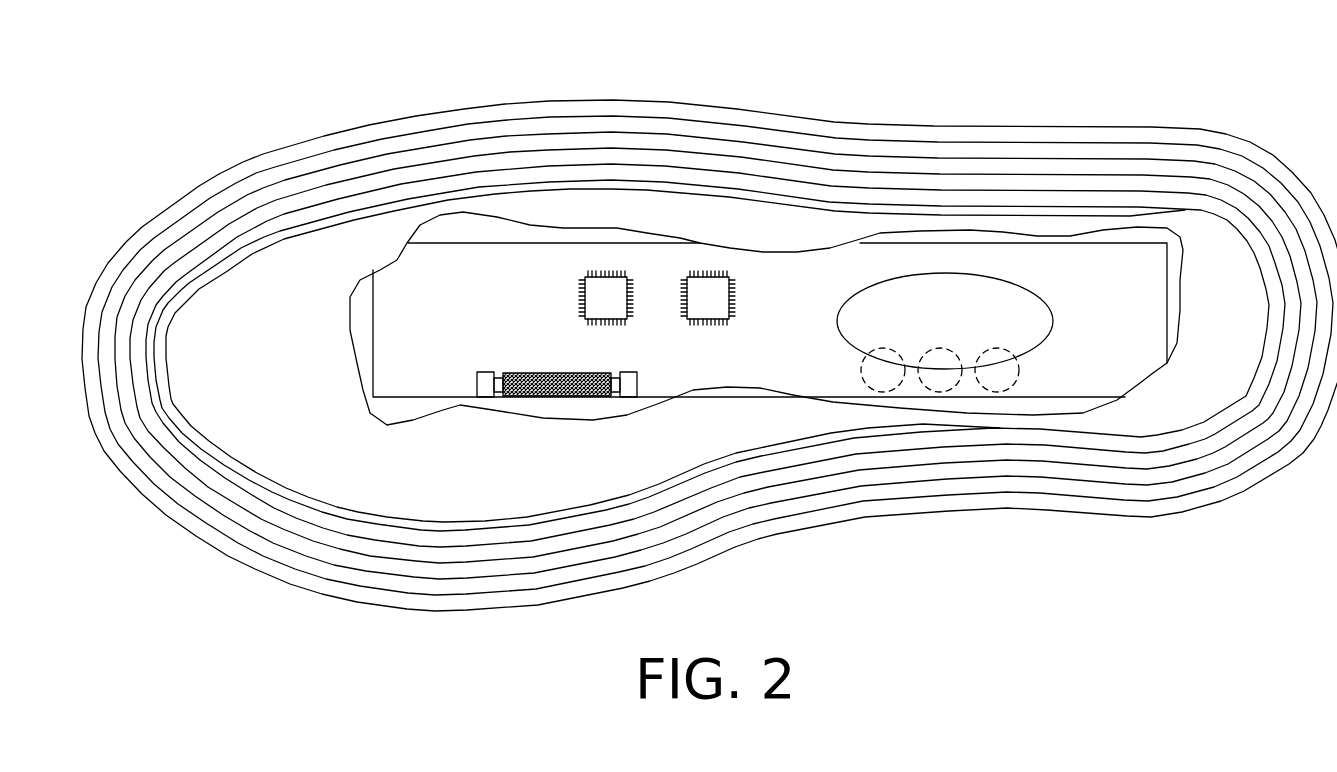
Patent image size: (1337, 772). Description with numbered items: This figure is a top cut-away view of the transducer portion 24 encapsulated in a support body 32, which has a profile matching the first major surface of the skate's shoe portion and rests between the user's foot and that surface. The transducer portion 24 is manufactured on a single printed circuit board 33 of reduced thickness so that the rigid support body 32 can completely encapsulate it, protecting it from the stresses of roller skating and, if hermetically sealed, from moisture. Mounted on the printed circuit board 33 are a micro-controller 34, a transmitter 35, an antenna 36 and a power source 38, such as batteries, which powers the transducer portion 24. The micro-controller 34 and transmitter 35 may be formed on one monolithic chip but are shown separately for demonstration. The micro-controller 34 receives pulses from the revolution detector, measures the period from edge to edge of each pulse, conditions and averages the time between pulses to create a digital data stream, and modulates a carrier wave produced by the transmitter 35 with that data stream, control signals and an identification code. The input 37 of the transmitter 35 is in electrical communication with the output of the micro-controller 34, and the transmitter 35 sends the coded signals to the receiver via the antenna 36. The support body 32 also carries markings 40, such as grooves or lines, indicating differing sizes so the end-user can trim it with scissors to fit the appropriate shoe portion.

The transducer portion 24 is at (888, 58).
The support body 32 is at (112, 247).
The printed circuit board 33 is at (801, 311).
The micro-controller 34 is at (619, 307).
The transmitter 35 is at (721, 307).
The antenna 36 is at (1053, 321).
The input of the transmitter 37 is at (380, 372).
The power source 38 is at (883, 349).
The markings 40 is at (305, 202).